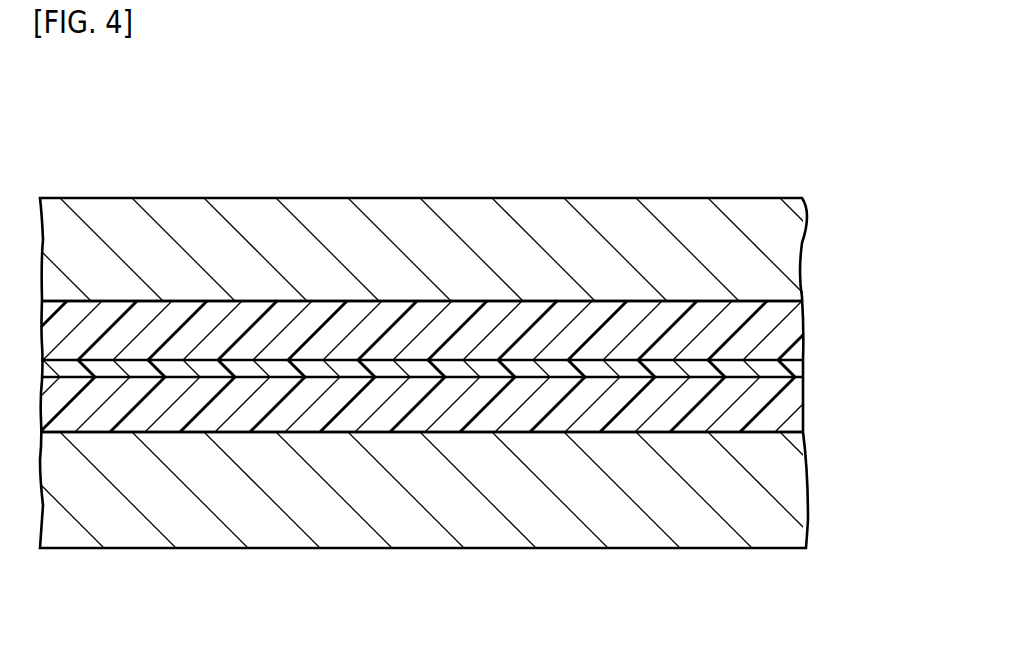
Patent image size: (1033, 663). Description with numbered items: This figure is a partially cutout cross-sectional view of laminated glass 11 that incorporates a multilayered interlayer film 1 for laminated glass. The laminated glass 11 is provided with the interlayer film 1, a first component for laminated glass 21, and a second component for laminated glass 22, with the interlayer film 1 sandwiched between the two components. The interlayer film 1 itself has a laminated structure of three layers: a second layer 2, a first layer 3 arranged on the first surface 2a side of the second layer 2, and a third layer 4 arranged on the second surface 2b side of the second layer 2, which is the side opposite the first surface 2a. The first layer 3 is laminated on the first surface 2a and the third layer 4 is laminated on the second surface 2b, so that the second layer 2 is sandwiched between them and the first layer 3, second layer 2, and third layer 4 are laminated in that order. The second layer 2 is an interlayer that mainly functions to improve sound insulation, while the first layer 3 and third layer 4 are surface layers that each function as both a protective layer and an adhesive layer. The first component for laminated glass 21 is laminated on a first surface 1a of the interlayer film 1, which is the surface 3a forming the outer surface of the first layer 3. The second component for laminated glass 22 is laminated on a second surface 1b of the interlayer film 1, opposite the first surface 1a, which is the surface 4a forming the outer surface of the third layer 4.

The laminated glass 11 is at (207, 167).
The first component for laminated glass 21 is at (805, 245).
The second component for laminated glass 22 is at (807, 493).
The interlayer film 1 is at (461, 376).
The first surface of the interlayer film 1a is at (437, 300).
The second surface of the interlayer film 1b is at (430, 432).
The second layer 2 is at (808, 365).
The first surface of the second layer 2a is at (537, 360).
The second surface of the second layer 2b is at (537, 432).
The first layer 3 is at (808, 327).
The surface of the first layer 3a is at (703, 297).
The third layer 4 is at (808, 402).
The surface of the third layer 4a is at (693, 432).